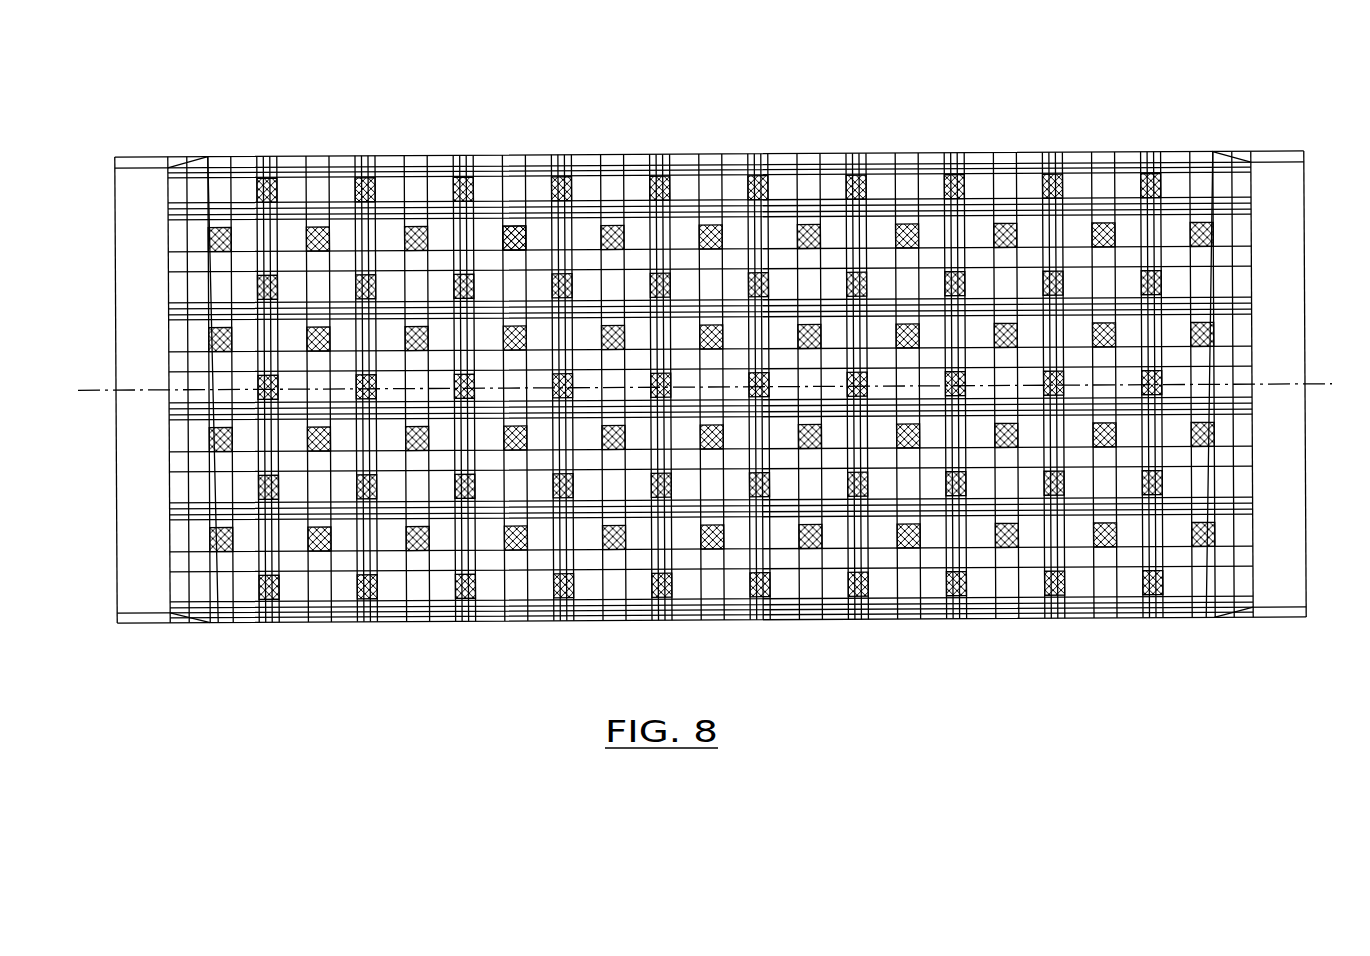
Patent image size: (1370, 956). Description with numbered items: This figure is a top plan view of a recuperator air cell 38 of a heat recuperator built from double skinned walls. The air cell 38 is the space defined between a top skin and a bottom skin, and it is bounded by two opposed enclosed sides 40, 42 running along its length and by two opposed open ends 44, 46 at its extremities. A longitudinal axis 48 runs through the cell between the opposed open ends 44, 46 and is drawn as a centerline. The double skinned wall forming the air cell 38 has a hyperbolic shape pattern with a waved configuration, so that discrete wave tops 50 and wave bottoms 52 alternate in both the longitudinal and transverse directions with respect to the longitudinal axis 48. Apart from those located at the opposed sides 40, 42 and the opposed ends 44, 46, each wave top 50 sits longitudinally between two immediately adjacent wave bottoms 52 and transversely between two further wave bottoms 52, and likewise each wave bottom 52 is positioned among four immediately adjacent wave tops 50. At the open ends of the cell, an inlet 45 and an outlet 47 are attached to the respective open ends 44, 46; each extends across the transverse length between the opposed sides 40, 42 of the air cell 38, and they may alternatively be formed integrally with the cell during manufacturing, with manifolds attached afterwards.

The air cell 38 is at (262, 124).
The enclosed side 40 is at (1083, 152).
The enclosed side 42 is at (936, 623).
The open end 44 is at (168, 318).
The inlet 45 is at (142, 472).
The open end 46 is at (1253, 231).
The outlet 47 is at (1278, 502).
The longitudinal axis 48 is at (1322, 386).
The wave tops 50 is at (463, 241).
The wave bottoms 52 is at (527, 233).